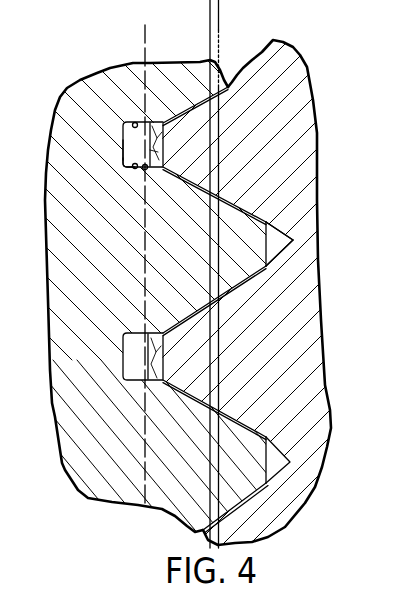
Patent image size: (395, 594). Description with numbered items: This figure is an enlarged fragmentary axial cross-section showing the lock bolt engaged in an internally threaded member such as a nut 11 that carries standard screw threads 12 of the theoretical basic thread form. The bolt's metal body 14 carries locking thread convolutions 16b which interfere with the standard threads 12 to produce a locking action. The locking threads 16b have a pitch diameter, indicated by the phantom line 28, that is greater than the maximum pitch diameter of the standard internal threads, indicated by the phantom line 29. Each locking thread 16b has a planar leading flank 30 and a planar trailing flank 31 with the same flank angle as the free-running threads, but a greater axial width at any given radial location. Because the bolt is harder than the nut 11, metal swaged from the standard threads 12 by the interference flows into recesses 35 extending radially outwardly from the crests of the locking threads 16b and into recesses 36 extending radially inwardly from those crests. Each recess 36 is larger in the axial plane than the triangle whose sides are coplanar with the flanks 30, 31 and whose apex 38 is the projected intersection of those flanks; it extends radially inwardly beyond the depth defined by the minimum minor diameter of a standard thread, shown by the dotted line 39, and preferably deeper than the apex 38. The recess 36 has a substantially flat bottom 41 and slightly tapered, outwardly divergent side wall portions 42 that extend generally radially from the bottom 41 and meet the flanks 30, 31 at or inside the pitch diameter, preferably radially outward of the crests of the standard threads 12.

The nut 11 is at (298, 93).
The standard screw threads 12 is at (197, 157).
The metal body 14 is at (66, 405).
The locking thread convolutions 16b is at (253, 263).
The phantom line 28 is at (221, 22).
The phantom line 29 is at (209, 25).
The leading flank 30 is at (244, 294).
The trailing flank 31 is at (239, 200).
The recess 35 is at (305, 229).
The recess 36 is at (123, 133).
The apex 38 is at (124, 153).
The dotted line 39 is at (144, 34).
The flat bottom 41 is at (124, 166).
The side wall portions 42 is at (136, 122).